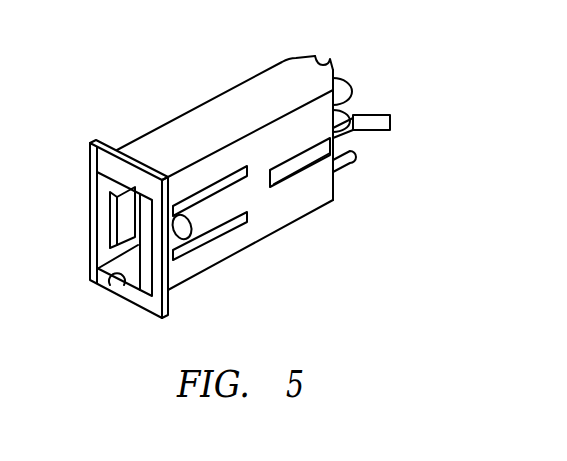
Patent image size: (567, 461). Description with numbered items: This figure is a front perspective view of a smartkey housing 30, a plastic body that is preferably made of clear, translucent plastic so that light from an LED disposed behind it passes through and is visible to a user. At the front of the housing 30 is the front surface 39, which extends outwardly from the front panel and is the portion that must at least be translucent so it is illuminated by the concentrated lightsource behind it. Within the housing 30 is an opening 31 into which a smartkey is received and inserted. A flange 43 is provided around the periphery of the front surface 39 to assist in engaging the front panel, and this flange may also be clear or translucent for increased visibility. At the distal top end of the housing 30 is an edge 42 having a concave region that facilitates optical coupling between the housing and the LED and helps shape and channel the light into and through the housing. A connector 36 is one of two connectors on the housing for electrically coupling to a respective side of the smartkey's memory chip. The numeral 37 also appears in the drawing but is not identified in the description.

The smartkey housing 30 is at (144, 105).
The opening 31 is at (222, 210).
The second connector 36 is at (390, 122).
The guide 37 is at (22, 7).
The front surface 39 is at (98, 222).
The edge 42 is at (322, 62).
The flange 43 is at (90, 146).